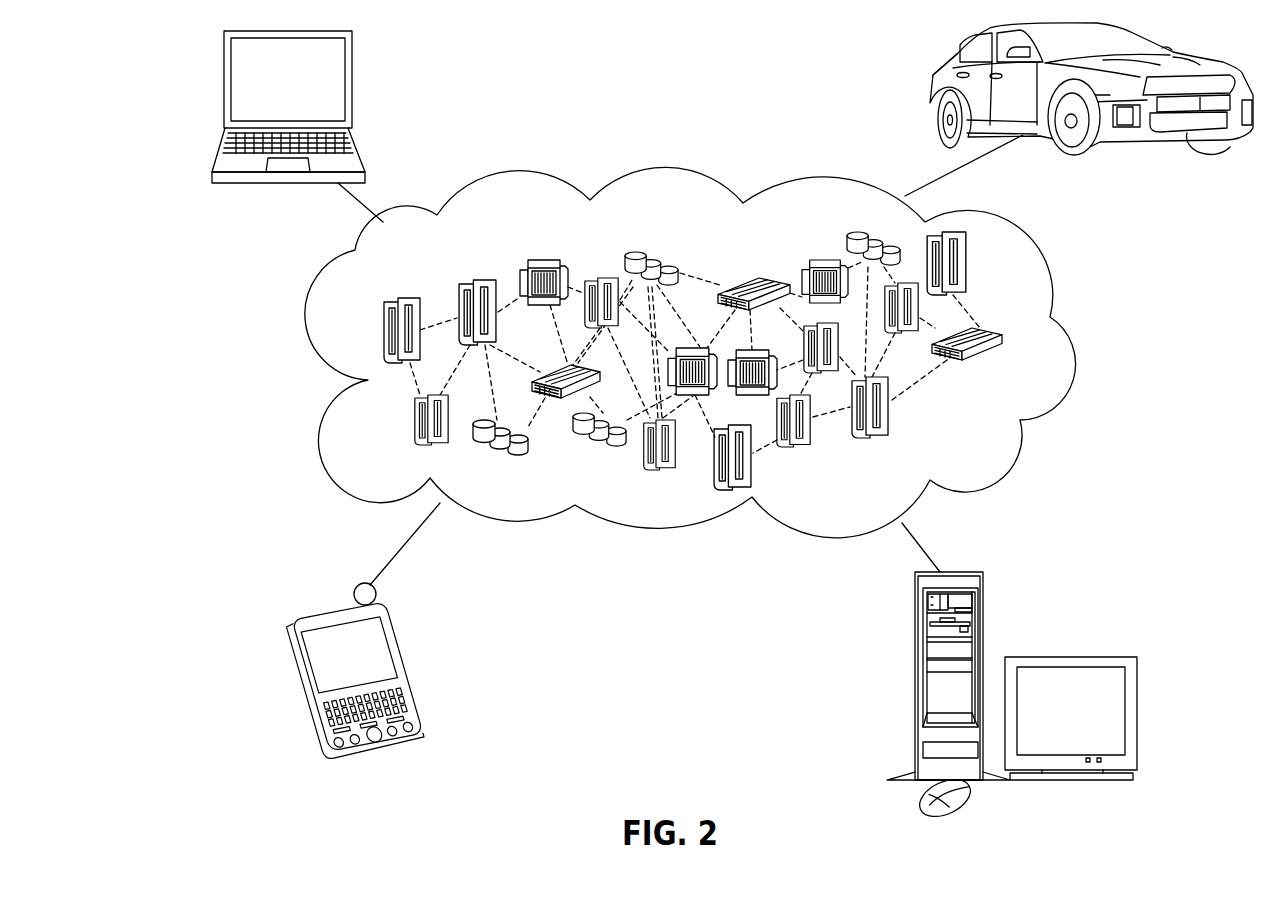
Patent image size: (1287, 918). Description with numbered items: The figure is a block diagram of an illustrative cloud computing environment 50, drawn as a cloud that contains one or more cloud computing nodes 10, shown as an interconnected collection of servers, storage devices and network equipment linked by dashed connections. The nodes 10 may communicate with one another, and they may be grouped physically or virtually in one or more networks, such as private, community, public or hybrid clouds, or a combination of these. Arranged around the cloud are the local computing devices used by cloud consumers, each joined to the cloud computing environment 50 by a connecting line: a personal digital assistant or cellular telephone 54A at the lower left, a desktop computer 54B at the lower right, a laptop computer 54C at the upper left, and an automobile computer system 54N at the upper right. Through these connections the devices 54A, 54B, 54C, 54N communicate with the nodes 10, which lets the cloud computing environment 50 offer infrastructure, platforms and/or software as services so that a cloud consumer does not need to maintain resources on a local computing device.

The cloud computing nodes 10 is at (983, 435).
The cloud computing environment 50 is at (1065, 342).
The personal digital assistant (PDA) or cellular telephone 54A is at (403, 638).
The desktop computer 54B is at (915, 627).
The laptop computer 54C is at (352, 66).
The automobile computer system 54N is at (933, 80).